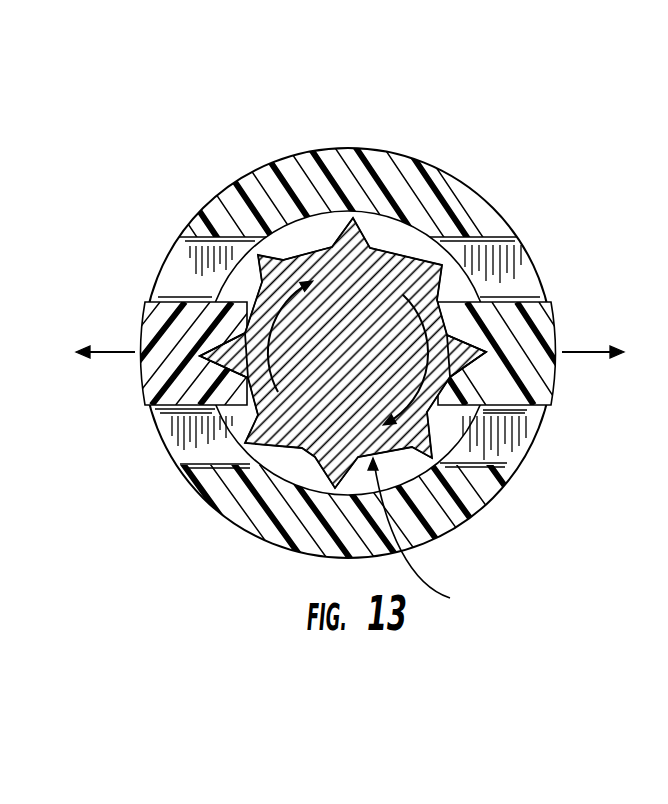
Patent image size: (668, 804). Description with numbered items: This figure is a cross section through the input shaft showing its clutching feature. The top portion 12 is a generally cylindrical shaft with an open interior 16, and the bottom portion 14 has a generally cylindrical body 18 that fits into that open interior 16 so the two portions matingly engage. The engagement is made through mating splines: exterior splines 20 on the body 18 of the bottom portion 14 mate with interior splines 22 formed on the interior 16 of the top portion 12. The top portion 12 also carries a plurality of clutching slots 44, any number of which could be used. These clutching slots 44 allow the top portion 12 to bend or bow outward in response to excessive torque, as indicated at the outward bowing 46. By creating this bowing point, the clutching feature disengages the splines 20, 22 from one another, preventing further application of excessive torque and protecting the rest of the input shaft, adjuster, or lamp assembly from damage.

The top portion 12 is at (340, 146).
The bottom portion 14 is at (318, 405).
The open interior 16 is at (390, 243).
The body 18 is at (423, 538).
The exterior splines 20 is at (268, 252).
The interior splines 22 is at (462, 330).
The clutching slots 44 is at (182, 273).
The outward bowing 46 is at (120, 334).